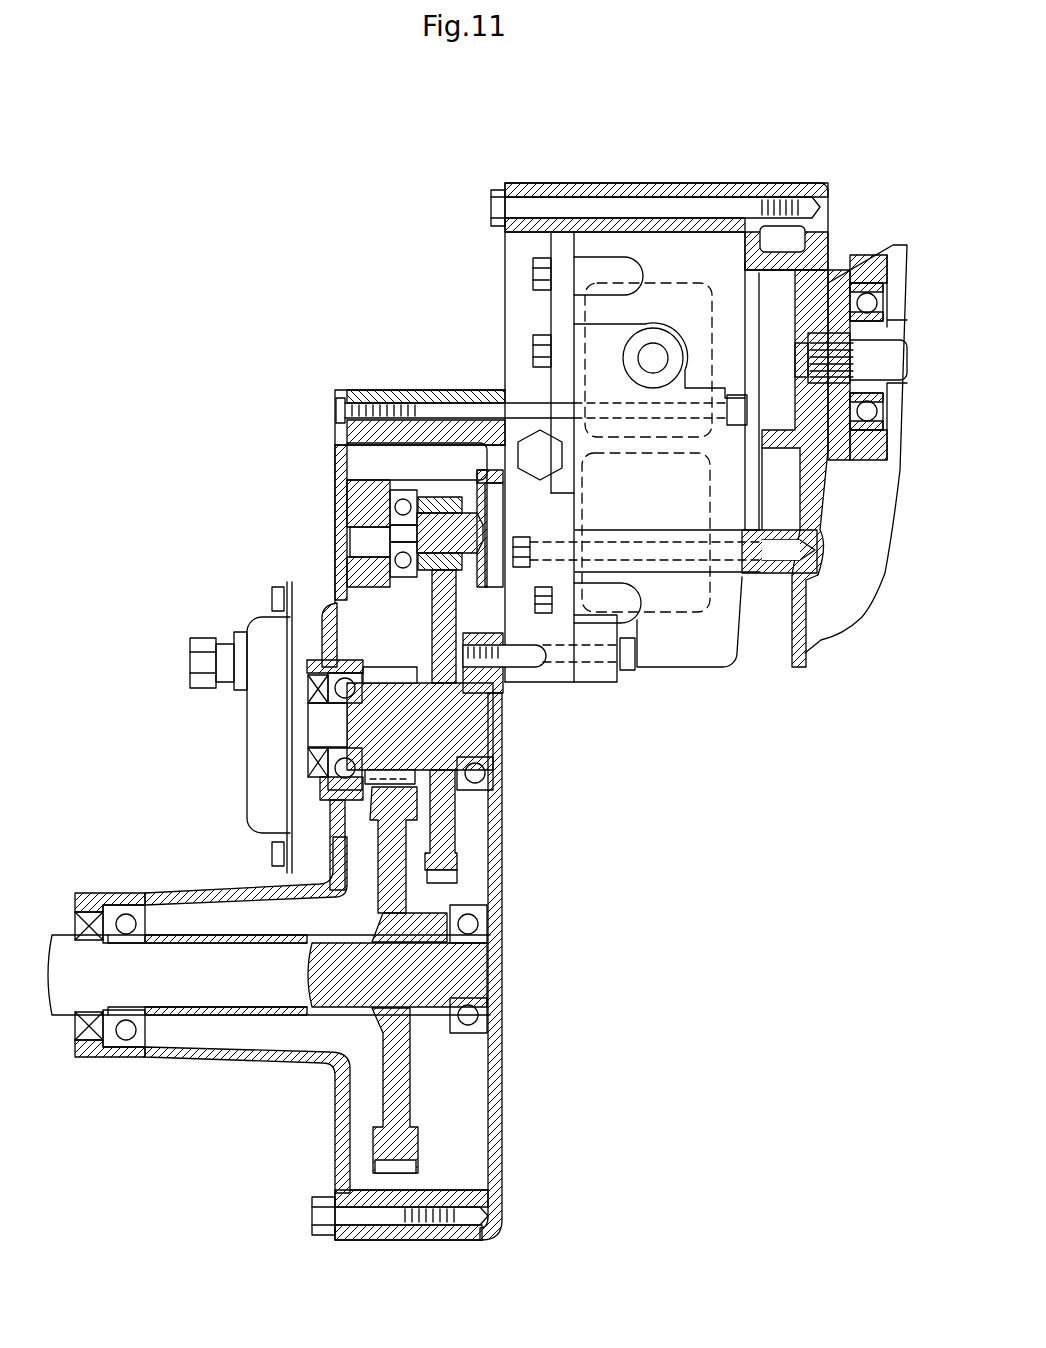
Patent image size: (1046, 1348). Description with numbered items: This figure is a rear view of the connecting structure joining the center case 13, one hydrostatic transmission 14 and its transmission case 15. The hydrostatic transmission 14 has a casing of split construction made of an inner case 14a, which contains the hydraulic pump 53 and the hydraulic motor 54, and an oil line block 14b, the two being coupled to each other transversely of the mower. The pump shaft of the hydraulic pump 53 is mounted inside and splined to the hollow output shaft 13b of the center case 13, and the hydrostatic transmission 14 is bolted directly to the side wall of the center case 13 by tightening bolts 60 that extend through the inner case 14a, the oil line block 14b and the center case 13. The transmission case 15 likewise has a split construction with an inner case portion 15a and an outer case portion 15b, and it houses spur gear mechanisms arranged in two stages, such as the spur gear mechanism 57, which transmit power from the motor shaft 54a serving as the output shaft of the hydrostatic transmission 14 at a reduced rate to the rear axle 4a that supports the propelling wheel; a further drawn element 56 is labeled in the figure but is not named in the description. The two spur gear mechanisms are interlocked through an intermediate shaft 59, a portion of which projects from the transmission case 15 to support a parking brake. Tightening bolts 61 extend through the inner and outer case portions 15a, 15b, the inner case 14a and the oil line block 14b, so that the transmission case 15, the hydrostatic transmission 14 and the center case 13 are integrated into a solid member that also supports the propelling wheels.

The axle 4a is at (212, 990).
The center case 13 is at (900, 240).
The hollow output shaft 13b is at (836, 420).
The hydrostatic transmission 14 is at (700, 678).
The inner case 14a is at (738, 630).
The oil line block 14b is at (505, 263).
The transmission case 15 is at (510, 1219).
The inner case portion 15a is at (507, 1150).
The outer case portion 15b is at (340, 1125).
The hydraulic pump 53 is at (672, 283).
The hydraulic motor 54 is at (657, 608).
The motor shaft 54a is at (366, 537).
The shaft 56 is at (412, 602).
The spur gear mechanism 57 is at (360, 796).
The intermediate shaft 59 is at (480, 724).
The tightening bolts 60 is at (612, 194).
The tightening bolts 61 is at (456, 404).